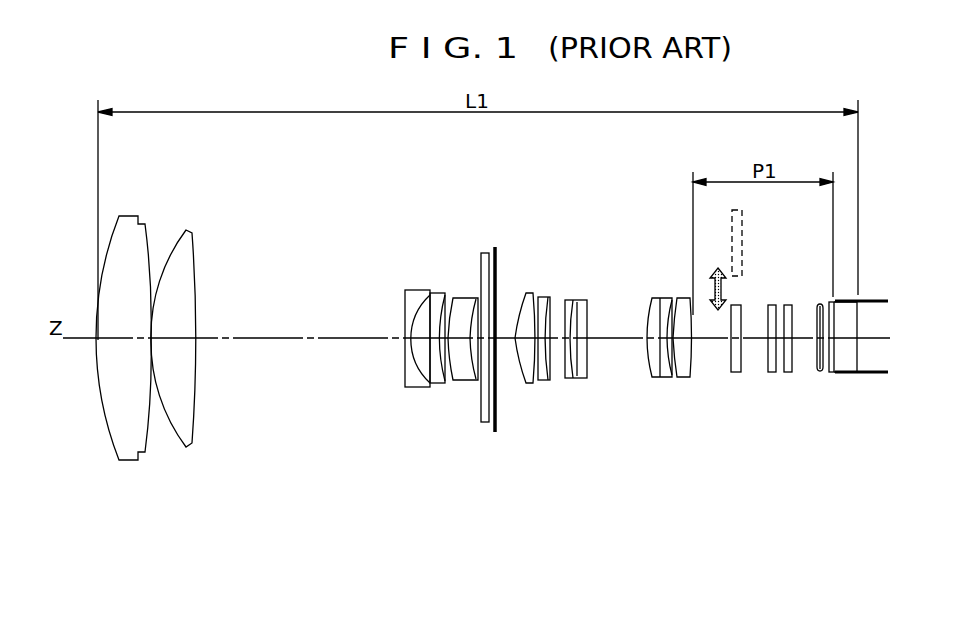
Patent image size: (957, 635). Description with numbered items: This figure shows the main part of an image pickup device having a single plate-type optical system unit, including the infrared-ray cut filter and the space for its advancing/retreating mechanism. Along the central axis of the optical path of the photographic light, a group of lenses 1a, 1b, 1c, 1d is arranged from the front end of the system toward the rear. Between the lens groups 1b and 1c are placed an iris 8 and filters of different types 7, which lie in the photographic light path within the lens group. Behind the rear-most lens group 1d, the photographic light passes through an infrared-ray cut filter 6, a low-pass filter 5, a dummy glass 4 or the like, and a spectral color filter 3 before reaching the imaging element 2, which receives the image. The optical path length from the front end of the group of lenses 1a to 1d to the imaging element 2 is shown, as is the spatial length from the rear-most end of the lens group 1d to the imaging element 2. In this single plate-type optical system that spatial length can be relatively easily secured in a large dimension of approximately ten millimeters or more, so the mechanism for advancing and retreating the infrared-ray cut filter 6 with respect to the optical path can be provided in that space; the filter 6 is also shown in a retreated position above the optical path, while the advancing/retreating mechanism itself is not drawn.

The lens group 1a is at (200, 203).
The lens group 1b is at (477, 283).
The lens group 1c is at (602, 281).
The lens group 1d is at (692, 284).
The imaging element 2 is at (847, 360).
The spectral color filter 3 is at (820, 372).
The dummy glass 4 is at (788, 372).
The low-pass filter 5 is at (772, 372).
The infrared-ray cut filter 6 is at (742, 232).
The filters of different types 7 is at (497, 398).
The iris 8 is at (486, 382).